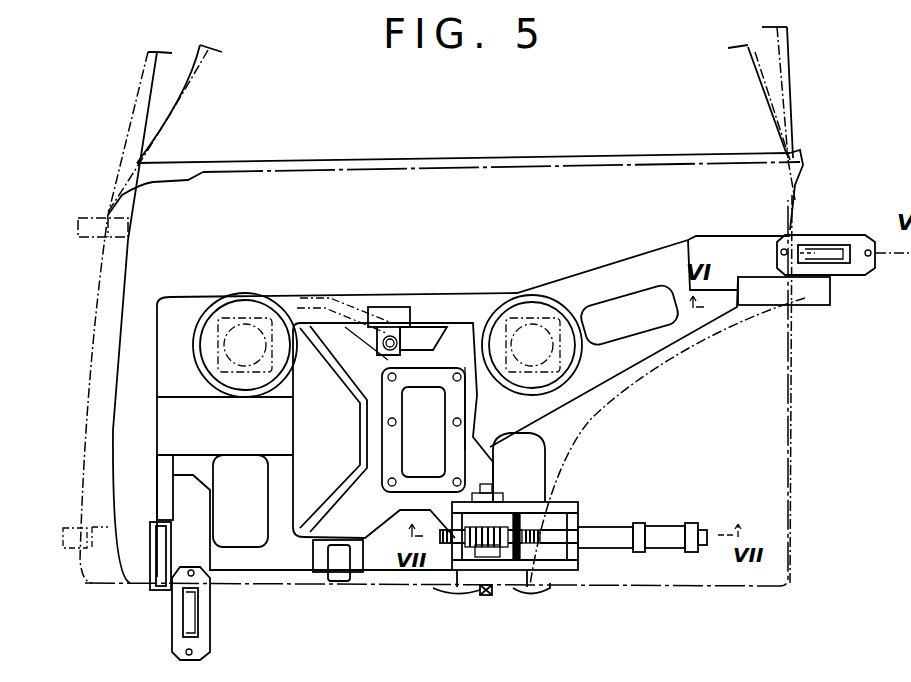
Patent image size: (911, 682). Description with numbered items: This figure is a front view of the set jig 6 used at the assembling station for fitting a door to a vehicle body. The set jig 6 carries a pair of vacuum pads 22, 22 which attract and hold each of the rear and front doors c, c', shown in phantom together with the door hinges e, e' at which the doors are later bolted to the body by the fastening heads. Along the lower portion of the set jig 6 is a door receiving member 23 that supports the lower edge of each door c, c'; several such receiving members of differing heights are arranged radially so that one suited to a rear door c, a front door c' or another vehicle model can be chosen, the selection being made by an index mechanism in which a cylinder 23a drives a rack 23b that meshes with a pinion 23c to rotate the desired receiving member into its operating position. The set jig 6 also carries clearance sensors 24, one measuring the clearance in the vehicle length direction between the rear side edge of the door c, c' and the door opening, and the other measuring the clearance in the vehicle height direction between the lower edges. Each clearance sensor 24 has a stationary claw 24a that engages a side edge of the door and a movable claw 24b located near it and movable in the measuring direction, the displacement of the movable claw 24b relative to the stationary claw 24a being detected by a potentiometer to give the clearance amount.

The set jig 6 is at (432, 302).
The vacuum pad 22 is at (250, 296).
The door receiving member 23 is at (442, 590).
The cylinder 23a is at (618, 530).
The rack 23b is at (533, 527).
The pinion 23c is at (503, 530).
The clearance sensor 24 is at (833, 231).
The stationary claw 24a is at (797, 296).
The movable claw 24b is at (843, 258).
The rear door c is at (667, 441).
The front door c' is at (821, 390).
The door hinge e is at (100, 354).
The door hinge e' is at (79, 386).